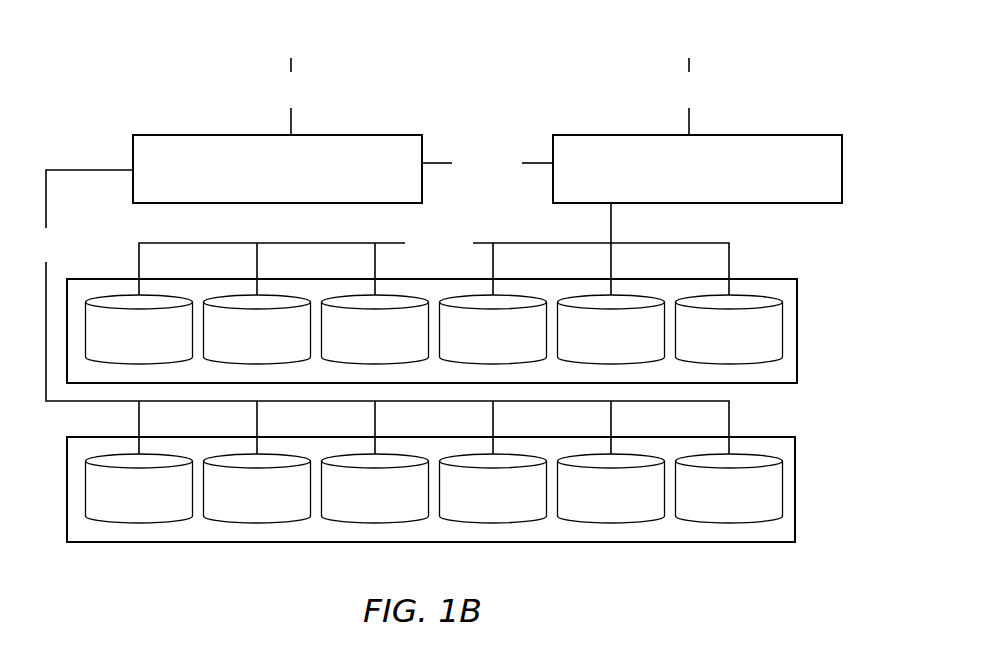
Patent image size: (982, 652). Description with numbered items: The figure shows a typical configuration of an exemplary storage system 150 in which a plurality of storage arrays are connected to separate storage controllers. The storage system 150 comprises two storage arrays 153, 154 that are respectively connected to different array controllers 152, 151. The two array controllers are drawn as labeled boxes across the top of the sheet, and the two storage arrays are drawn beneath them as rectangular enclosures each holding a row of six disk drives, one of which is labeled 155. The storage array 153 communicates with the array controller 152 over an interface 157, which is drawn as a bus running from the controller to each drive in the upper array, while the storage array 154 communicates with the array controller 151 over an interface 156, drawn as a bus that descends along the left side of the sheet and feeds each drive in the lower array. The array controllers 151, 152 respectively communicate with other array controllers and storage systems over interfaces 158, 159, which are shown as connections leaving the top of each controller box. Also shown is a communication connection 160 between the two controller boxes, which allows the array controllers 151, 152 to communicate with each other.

The storage system 150 is at (190, 76).
The array controller 151 is at (371, 124).
The array controller 152 is at (768, 122).
The storage array 153 is at (767, 264).
The storage array 154 is at (477, 483).
The disk drive 155 is at (119, 530).
The interface 156 is at (377, 312).
The interface 157 is at (434, 249).
The interface 158 is at (293, 96).
The interface 159 is at (690, 96).
The communication connection 160 is at (487, 163).